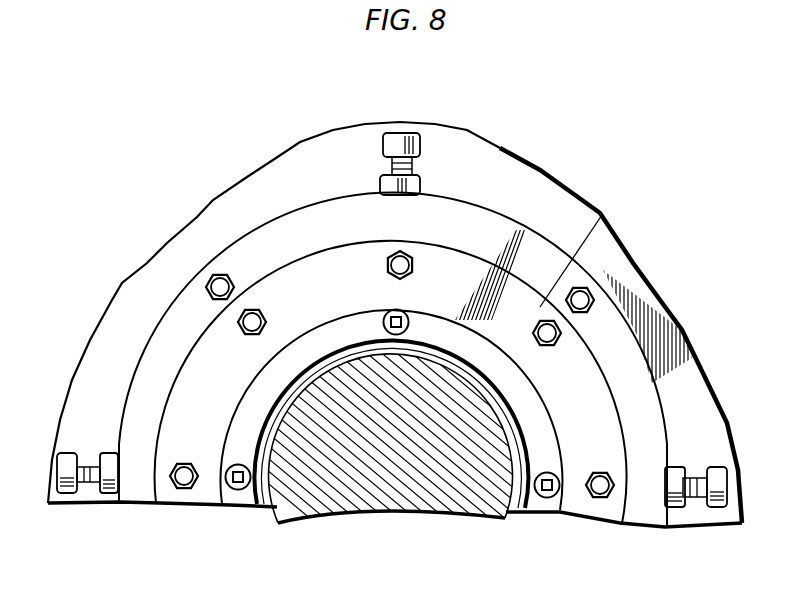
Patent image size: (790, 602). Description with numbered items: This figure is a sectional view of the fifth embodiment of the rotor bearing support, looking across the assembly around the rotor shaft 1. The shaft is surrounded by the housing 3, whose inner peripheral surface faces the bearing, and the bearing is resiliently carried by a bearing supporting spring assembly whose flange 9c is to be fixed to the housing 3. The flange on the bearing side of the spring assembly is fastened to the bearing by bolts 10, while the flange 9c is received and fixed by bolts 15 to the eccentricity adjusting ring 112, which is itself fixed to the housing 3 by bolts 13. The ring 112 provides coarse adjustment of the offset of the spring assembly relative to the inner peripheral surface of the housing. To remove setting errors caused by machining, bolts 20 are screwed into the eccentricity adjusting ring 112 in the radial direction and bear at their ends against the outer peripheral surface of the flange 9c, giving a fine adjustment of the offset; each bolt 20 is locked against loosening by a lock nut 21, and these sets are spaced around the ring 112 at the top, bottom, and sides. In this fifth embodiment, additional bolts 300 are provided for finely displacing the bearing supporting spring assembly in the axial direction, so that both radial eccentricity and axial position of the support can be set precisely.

The rotor shaft 1 is at (422, 498).
The housing 3 is at (582, 213).
The flange 9c is at (602, 215).
The bolts 10 is at (547, 497).
The bolts 13 is at (578, 287).
The bolts 15 is at (537, 330).
The bolts 20 is at (383, 146).
The lock nuts 21 is at (420, 190).
The eccentricity adjusting ring 112 is at (513, 232).
The bolts 300 is at (414, 265).